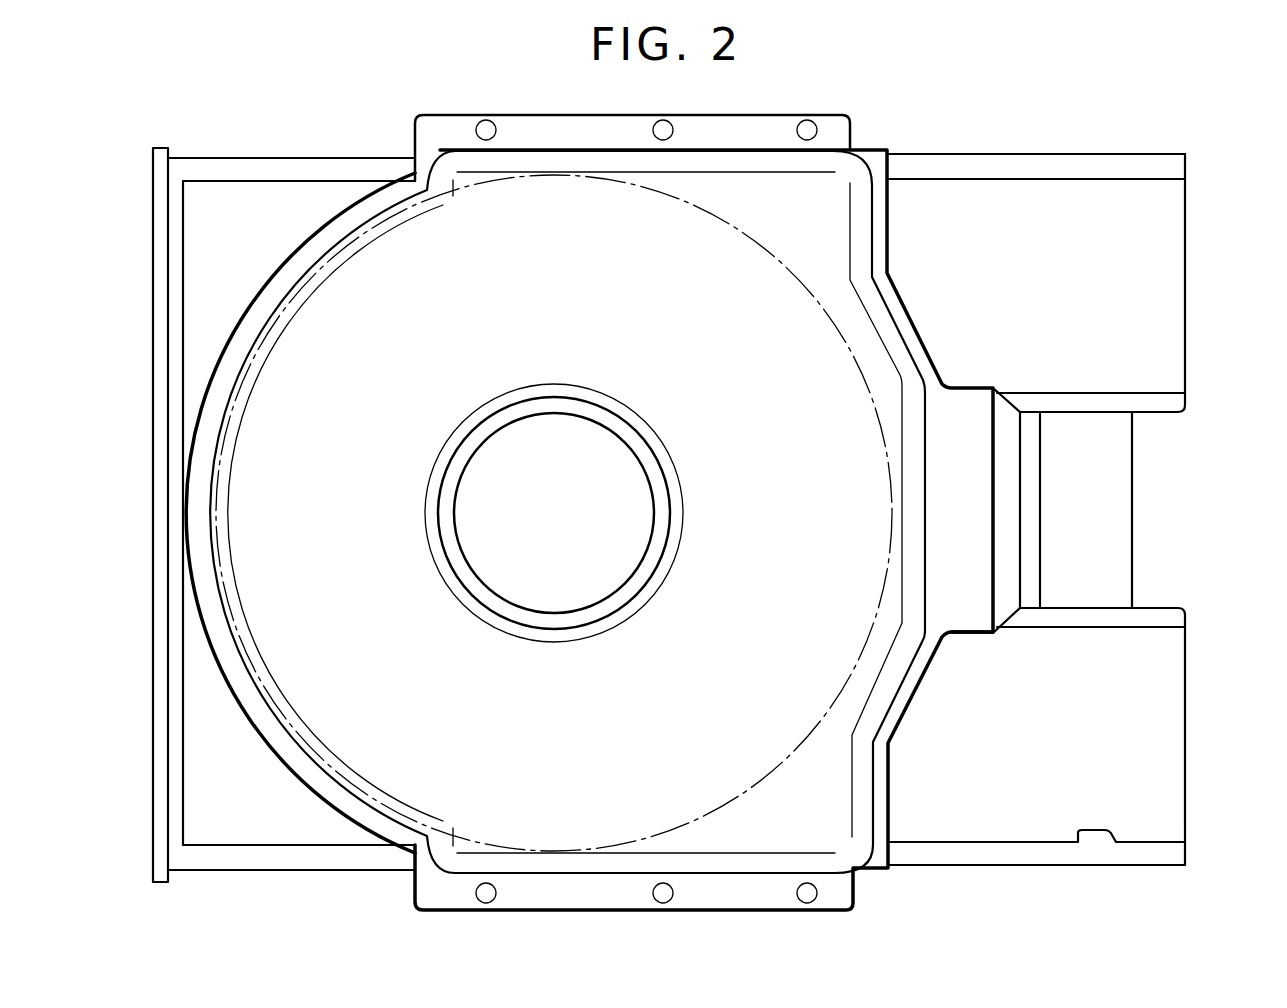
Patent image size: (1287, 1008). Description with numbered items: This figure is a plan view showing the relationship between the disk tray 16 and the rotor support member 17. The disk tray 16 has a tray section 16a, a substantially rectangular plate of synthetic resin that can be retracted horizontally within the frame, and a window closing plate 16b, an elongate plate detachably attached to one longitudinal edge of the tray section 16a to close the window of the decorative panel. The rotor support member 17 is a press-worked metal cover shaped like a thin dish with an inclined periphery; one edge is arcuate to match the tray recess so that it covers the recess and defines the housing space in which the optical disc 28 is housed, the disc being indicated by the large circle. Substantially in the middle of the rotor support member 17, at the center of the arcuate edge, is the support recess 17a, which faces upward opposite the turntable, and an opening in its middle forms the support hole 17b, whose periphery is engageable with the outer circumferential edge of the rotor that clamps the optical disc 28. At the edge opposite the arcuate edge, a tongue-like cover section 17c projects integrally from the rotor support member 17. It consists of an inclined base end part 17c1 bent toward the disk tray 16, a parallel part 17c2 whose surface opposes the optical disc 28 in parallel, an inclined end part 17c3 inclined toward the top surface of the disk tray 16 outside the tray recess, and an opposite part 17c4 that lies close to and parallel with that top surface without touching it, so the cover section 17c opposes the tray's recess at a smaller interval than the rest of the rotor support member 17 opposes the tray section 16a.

The disk tray 16 is at (1187, 283).
The tray section 16a is at (1038, 154).
The window closing plate 16b is at (155, 268).
The rotor support member 17 is at (910, 313).
The support recess 17a is at (537, 617).
The support hole 17b is at (645, 552).
The cover section 17c is at (1042, 510).
The inclined base end part 17c1 is at (918, 418).
The parallel part 17c2 is at (958, 608).
The inclined end part 17c3 is at (1007, 606).
The opposite part 17c4 is at (1033, 415).
The optical disc 28 is at (803, 280).